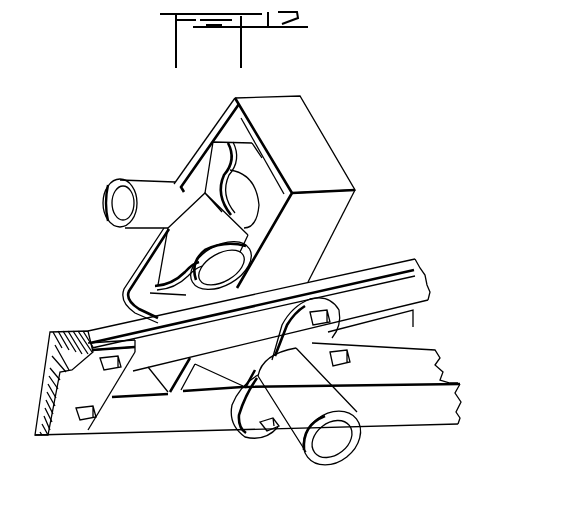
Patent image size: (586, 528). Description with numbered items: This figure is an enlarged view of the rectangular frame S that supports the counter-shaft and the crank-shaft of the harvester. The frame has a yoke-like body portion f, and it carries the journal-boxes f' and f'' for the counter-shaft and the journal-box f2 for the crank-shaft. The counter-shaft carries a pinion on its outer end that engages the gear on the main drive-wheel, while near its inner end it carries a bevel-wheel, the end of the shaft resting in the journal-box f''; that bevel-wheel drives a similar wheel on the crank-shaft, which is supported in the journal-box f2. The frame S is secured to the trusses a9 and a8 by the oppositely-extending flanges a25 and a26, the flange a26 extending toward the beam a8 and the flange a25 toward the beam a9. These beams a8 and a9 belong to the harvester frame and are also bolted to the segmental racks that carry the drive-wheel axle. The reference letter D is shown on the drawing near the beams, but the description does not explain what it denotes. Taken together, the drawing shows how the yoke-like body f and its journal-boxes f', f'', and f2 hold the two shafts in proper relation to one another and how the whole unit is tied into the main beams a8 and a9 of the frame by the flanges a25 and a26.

The rectangular frame S is at (295, 144).
The yoke-like body portion f is at (239, 210).
The journal-box f2 is at (110, 230).
The journal-box f'' is at (206, 224).
The beam a8 is at (259, 315).
The flange a26 is at (388, 319).
The frame D is at (420, 310).
The flange a25 is at (354, 374).
The beam a9 is at (248, 383).
The journal-box f' is at (301, 390).